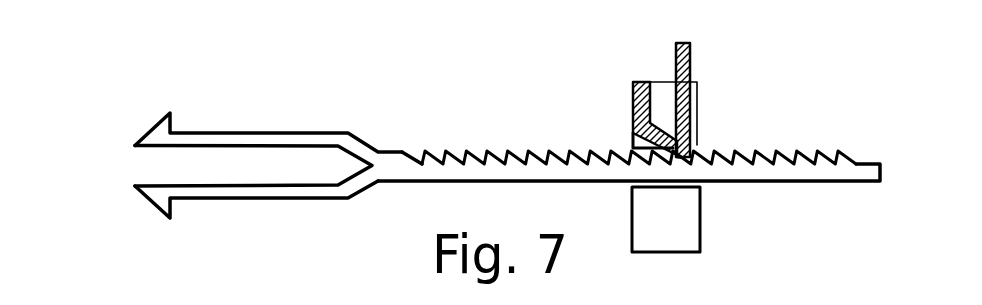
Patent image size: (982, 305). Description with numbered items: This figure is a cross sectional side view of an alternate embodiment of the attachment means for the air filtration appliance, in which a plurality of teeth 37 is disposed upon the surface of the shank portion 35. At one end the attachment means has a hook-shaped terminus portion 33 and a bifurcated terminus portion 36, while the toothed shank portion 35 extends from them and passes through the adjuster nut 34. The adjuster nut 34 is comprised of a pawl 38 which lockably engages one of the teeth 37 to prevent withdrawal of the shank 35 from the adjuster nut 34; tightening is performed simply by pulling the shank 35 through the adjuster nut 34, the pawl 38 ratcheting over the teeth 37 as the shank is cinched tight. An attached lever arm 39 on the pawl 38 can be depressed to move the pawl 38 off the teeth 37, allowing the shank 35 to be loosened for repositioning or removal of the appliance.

The hook-shaped terminus portion of the attachment means 33 is at (135, 205).
The adjuster nut 34 is at (782, 225).
The shank portion of an attachment means 35 is at (457, 177).
The bifurcated terminus portion of an attachment means 36 is at (227, 197).
The teeth on shank portion of an attachment means 37 is at (572, 147).
The pawl of adjuster nut 38 is at (698, 142).
The lever arm for pawl 39 is at (692, 53).